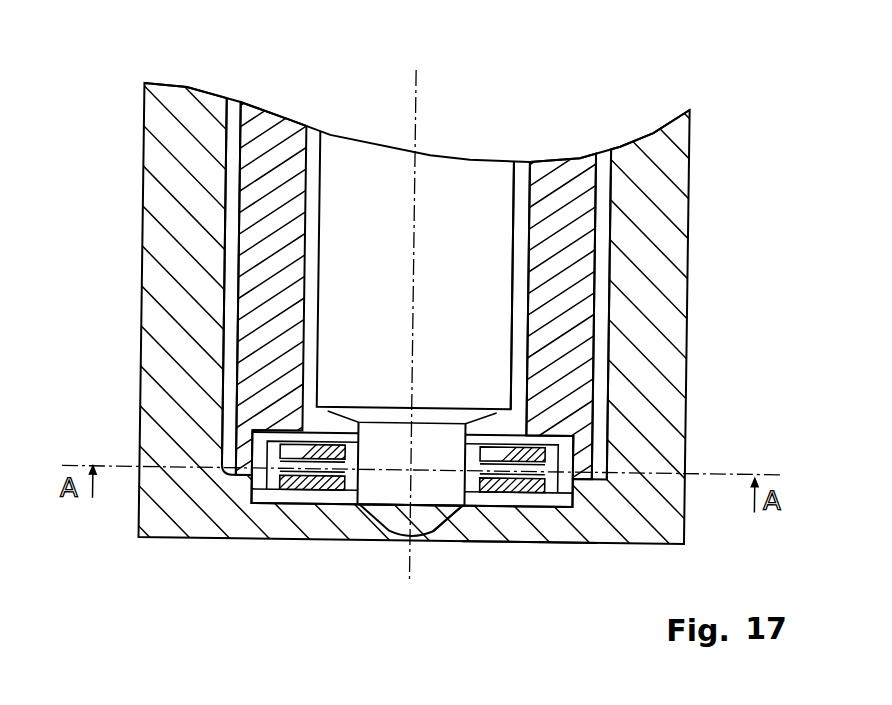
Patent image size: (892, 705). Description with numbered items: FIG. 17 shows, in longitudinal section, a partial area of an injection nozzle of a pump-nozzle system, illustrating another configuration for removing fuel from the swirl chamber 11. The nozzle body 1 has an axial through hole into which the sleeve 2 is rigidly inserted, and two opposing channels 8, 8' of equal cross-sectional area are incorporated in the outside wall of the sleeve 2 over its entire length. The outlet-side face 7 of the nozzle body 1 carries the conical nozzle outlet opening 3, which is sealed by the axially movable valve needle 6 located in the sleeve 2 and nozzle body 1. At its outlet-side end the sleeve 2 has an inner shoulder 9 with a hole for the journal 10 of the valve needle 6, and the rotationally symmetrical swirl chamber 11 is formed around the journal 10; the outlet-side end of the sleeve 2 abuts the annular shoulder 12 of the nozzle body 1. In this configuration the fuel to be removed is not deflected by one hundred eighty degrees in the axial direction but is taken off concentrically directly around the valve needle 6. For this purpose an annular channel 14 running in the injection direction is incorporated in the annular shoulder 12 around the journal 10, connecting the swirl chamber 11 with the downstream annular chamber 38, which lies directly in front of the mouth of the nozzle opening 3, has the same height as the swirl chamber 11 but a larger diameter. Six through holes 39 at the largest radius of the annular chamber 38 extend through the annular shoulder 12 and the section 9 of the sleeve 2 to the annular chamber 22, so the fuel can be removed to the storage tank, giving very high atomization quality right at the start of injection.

The nozzle body 1 is at (655, 288).
The sleeve 2 is at (566, 234).
The nozzle outlet opening 3 is at (421, 543).
The valve needle 6 is at (478, 184).
The outlet-side face 7 is at (518, 544).
The channel 8 is at (635, 247).
The channel 8' is at (214, 237).
The inner shoulder 9 is at (250, 437).
The journal 10 is at (380, 493).
The swirl chamber 11 is at (555, 508).
The annular shoulder 12 is at (478, 529).
The annular channel 14 is at (350, 491).
The annular chamber 22 is at (523, 354).
The annular chamber 38 is at (324, 498).
The through holes 39 is at (250, 462).